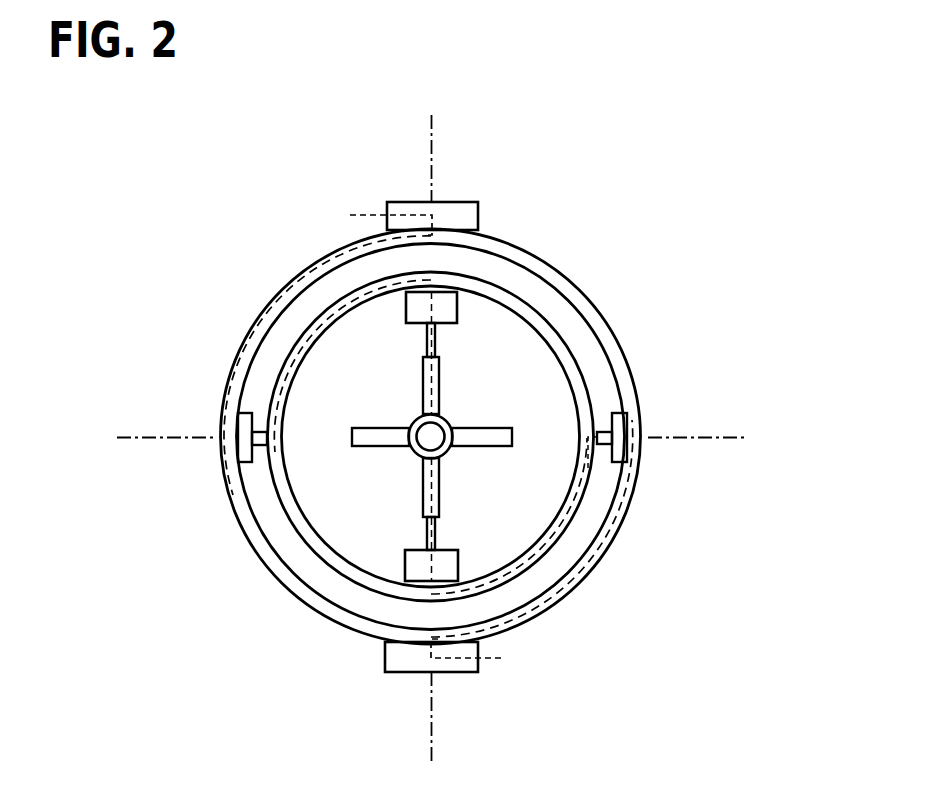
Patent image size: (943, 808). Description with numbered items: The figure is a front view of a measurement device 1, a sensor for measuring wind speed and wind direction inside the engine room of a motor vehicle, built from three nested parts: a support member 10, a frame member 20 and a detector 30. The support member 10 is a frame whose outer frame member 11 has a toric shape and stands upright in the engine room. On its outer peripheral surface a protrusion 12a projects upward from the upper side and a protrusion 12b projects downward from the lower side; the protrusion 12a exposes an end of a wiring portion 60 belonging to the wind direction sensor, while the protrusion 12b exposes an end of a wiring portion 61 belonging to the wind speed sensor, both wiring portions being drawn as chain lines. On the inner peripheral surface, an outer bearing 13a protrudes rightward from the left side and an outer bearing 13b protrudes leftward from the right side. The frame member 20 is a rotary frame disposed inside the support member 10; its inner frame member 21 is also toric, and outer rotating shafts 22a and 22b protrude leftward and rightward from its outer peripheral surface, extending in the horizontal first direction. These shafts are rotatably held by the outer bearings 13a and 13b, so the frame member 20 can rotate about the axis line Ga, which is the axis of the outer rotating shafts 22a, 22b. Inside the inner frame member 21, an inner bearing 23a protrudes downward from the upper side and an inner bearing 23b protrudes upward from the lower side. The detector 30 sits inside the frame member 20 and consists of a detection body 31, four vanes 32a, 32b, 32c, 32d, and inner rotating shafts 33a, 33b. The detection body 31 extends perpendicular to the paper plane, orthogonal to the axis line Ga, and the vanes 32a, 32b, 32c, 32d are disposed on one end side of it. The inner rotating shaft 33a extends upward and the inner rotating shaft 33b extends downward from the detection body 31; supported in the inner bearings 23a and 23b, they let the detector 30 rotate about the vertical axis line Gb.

The measurement device 1 is at (157, 671).
The support member 10 is at (441, 440).
The outer frame member 11 is at (463, 436).
The protrusion 12a is at (448, 190).
The protrusion 12b is at (425, 704).
The outer bearing 13a is at (189, 459).
The outer bearing 13b is at (671, 456).
The frame member 20 is at (432, 481).
The inner frame member 21 is at (430, 488).
The outer rotating shaft 22a is at (228, 500).
The outer rotating shaft 22b is at (659, 484).
The inner bearing 23a is at (516, 241).
The inner bearing 23b is at (378, 649).
The detector 30 is at (333, 516).
The detection body 31 is at (596, 586).
The vane 32a is at (485, 574).
The vane 32b is at (576, 403).
The vane 32c is at (554, 362).
The vane 32d is at (284, 379).
The inner rotating shaft 33a is at (539, 292).
The inner rotating shaft 33b is at (464, 635).
The wiring portion 60 is at (366, 212).
The wiring portion 61 is at (453, 659).
The axis line Ga is at (722, 433).
The axis line Gb is at (431, 127).